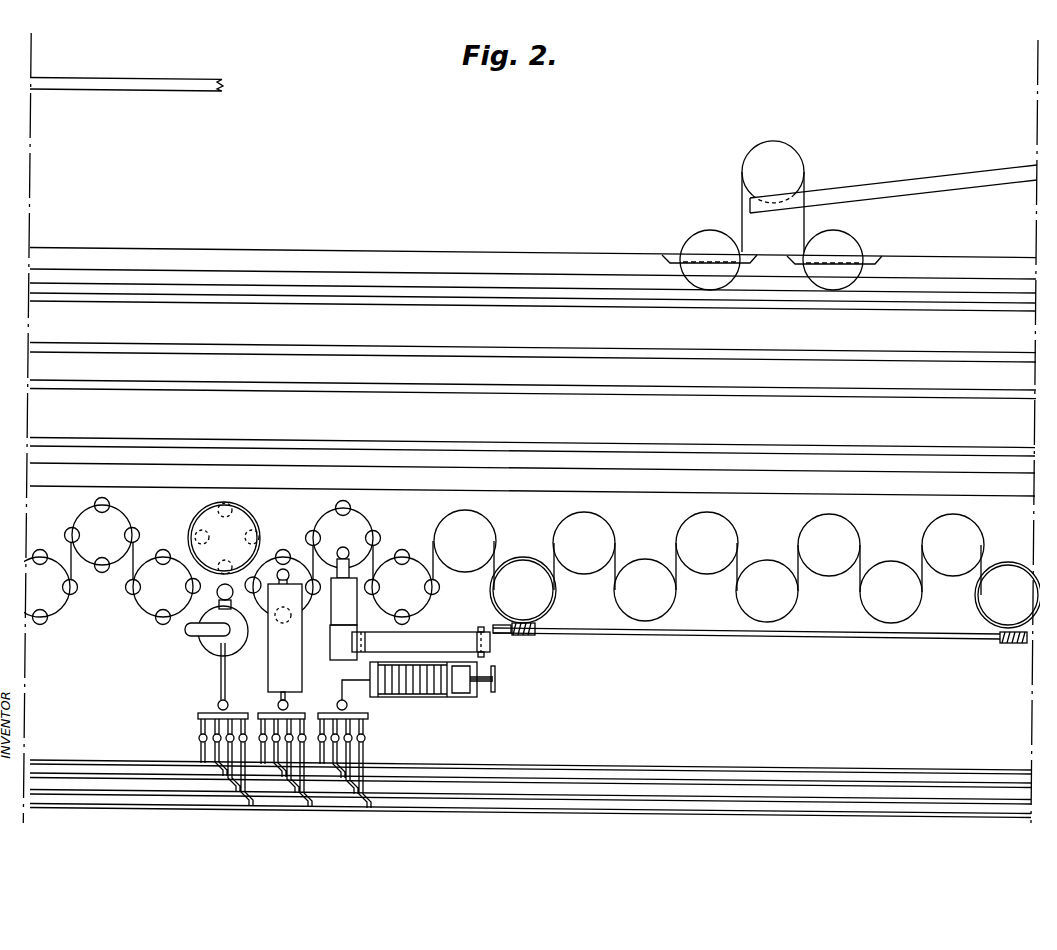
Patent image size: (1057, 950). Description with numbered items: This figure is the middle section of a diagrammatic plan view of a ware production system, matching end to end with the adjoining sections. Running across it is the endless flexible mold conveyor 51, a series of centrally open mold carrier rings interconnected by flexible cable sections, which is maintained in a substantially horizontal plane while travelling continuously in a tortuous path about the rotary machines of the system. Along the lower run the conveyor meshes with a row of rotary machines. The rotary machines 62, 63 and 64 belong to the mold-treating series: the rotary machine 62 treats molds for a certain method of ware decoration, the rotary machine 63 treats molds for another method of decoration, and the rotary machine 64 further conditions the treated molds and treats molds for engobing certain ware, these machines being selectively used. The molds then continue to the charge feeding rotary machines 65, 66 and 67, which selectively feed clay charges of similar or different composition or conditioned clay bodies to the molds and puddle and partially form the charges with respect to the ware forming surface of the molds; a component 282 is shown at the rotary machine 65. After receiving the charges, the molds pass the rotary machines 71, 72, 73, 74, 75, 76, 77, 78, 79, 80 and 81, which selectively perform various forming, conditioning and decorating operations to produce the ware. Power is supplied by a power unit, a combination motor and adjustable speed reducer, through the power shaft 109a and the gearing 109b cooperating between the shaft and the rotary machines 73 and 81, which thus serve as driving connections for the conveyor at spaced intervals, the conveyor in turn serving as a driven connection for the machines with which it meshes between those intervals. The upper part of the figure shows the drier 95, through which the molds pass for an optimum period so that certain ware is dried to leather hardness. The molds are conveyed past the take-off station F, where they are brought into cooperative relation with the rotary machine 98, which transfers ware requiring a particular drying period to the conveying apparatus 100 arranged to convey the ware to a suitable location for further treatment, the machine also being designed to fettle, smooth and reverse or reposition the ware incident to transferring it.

The drier 95 is at (166, 246).
The endless flexible mold conveyor 51 is at (613, 300).
The take-off station F is at (771, 129).
The rotary machine 98 is at (785, 161).
The conveying apparatus 100 is at (918, 181).
The rotary machine 62 is at (50, 571).
The rotary machine 63 is at (92, 526).
The rotary machine 64 is at (155, 571).
The rotary machine 65 is at (210, 529).
The valve 282 is at (247, 588).
The rotary machine 66 is at (297, 565).
The rotary machine 67 is at (332, 523).
The rotary machine 71 is at (390, 570).
The rotary machine 72 is at (446, 527).
The rotary machine 73 is at (517, 572).
The rotary machine 74 is at (565, 529).
The rotary machine 75 is at (640, 572).
The rotary machine 76 is at (690, 532).
The rotary machine 77 is at (765, 575).
The rotary machine 78 is at (812, 531).
The rotary machine 79 is at (885, 573).
The rotary machine 80 is at (935, 532).
The rotary machine 81 is at (1005, 579).
The power shaft 109a is at (840, 640).
The gearing 109b is at (528, 637).